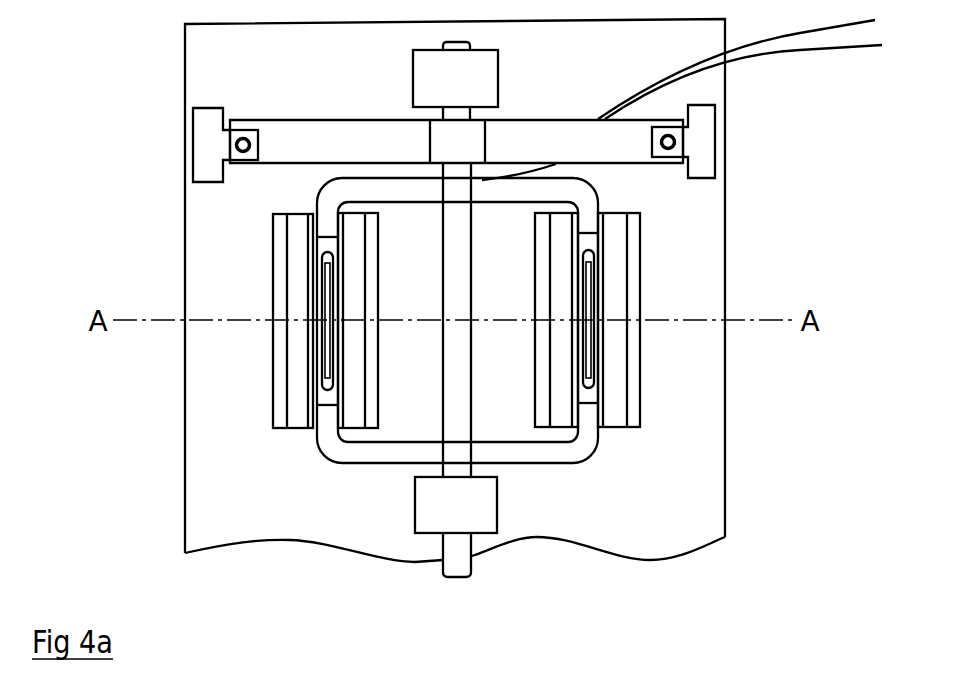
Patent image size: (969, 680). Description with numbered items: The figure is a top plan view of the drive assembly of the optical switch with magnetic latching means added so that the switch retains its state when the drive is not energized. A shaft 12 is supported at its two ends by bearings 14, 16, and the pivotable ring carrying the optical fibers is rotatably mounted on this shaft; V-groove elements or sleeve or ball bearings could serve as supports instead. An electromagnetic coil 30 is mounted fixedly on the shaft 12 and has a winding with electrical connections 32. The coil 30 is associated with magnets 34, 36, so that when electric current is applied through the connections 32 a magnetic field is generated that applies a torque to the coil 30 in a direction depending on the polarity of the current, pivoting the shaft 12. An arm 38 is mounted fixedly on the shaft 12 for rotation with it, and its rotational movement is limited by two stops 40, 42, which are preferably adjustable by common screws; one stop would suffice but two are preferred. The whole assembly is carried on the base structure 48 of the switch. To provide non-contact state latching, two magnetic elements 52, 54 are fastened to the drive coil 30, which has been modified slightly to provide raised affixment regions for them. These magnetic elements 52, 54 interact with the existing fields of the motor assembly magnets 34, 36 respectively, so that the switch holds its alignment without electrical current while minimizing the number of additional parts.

The shaft 12 is at (457, 565).
The bearing 14 is at (415, 500).
The bearing 16 is at (410, 82).
The electromagnetic coil 30 is at (328, 200).
The electrical connections 32 is at (835, 30).
The magnet 34 is at (295, 253).
The magnet 36 is at (560, 407).
The arm 38 is at (318, 113).
The stop 40 is at (233, 145).
The stop 42 is at (676, 142).
The base structure 48 is at (577, 535).
The magnetic element 52 is at (320, 340).
The magnetic element 54 is at (587, 337).